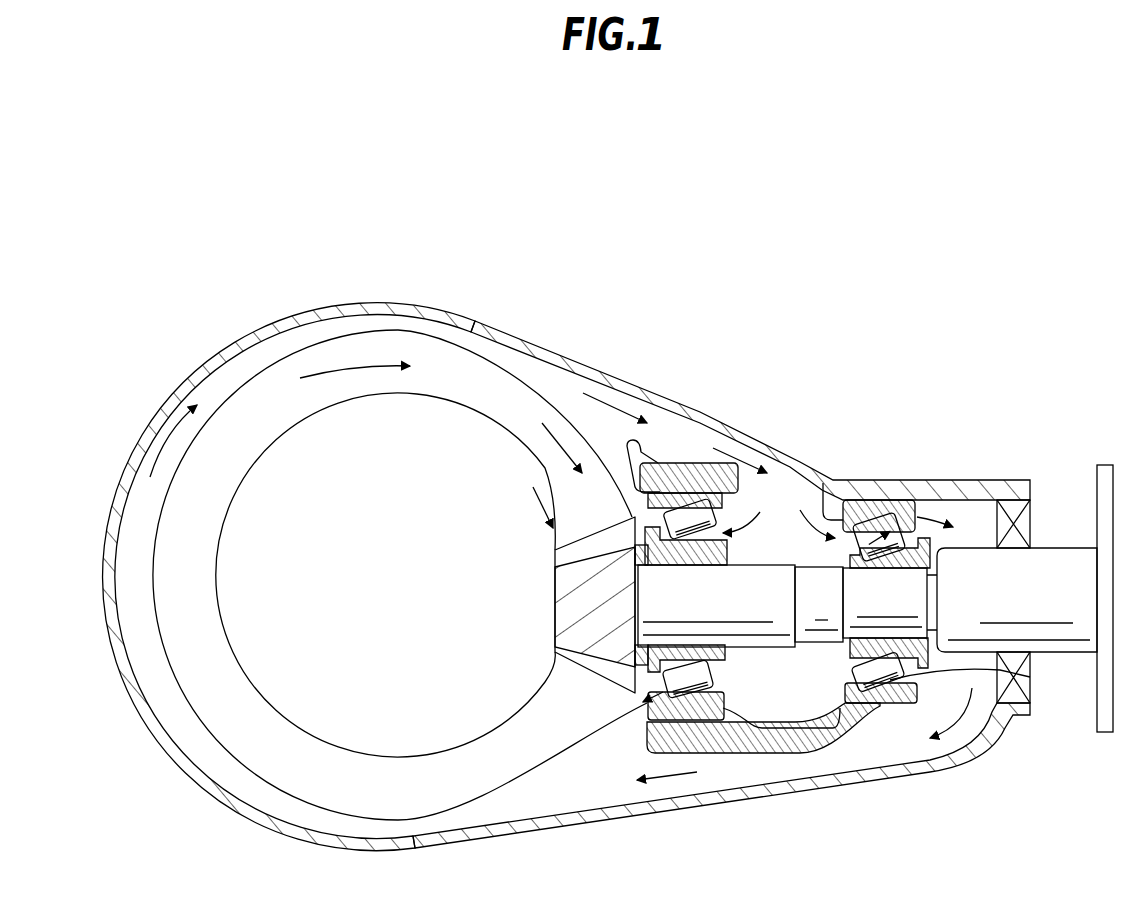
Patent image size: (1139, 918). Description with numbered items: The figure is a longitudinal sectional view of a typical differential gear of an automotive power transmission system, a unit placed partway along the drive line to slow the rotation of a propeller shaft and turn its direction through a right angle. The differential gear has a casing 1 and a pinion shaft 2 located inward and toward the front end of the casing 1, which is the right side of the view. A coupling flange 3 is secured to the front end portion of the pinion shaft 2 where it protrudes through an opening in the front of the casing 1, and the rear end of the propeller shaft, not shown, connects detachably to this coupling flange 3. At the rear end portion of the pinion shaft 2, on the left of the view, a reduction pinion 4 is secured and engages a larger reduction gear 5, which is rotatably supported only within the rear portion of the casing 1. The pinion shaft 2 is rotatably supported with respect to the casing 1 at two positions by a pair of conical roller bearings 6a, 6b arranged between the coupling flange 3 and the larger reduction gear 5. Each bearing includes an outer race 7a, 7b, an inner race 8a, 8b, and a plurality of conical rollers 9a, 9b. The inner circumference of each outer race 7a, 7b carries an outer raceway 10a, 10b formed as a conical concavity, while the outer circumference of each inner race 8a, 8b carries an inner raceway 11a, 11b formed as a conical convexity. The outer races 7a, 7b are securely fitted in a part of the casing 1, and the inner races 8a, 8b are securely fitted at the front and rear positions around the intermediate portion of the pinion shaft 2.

The casing 1 is at (553, 362).
The pinion shaft 2 is at (782, 627).
The coupling flange 3 is at (1105, 466).
The reduction pinion 4 is at (603, 527).
The larger reduction gear 5 is at (452, 360).
The conical roller bearing 6a is at (907, 594).
The conical roller bearing 6b is at (690, 620).
The outer race 7a is at (850, 713).
The outer race 7b is at (690, 505).
The inner race 8a is at (920, 545).
The inner race 8b is at (648, 690).
The conical rollers 9a is at (900, 535).
The conical rollers 9b is at (725, 490).
The outer raceway 10a is at (875, 515).
The outer raceway 10b is at (672, 500).
The inner raceway 11a is at (1033, 677).
The inner raceway 11b is at (710, 673).